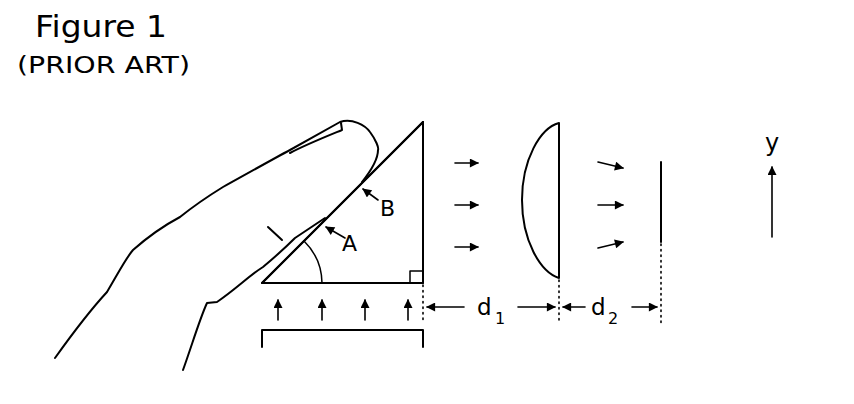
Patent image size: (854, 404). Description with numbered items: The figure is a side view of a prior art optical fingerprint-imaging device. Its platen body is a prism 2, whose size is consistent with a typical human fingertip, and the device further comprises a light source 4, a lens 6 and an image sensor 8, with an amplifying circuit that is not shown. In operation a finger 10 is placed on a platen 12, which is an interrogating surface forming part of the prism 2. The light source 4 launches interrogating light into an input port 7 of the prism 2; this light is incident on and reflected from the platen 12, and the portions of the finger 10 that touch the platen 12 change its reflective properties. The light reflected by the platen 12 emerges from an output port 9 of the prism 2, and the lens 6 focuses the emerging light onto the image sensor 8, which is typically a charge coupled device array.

The prism 2 is at (467, 84).
The light source 4 is at (425, 343).
The lens 6 is at (560, 128).
The input port 7 is at (283, 290).
The image sensor 8 is at (661, 227).
The output port 9 is at (426, 145).
The finger 10 is at (222, 188).
The platen 12 is at (404, 140).